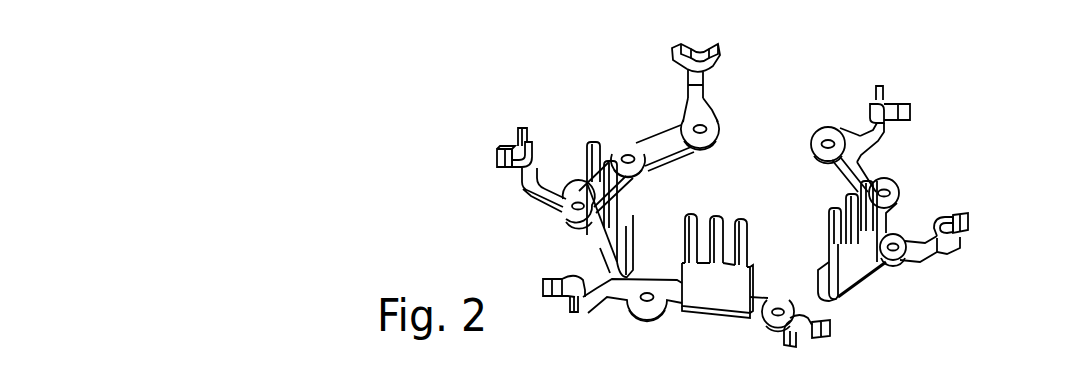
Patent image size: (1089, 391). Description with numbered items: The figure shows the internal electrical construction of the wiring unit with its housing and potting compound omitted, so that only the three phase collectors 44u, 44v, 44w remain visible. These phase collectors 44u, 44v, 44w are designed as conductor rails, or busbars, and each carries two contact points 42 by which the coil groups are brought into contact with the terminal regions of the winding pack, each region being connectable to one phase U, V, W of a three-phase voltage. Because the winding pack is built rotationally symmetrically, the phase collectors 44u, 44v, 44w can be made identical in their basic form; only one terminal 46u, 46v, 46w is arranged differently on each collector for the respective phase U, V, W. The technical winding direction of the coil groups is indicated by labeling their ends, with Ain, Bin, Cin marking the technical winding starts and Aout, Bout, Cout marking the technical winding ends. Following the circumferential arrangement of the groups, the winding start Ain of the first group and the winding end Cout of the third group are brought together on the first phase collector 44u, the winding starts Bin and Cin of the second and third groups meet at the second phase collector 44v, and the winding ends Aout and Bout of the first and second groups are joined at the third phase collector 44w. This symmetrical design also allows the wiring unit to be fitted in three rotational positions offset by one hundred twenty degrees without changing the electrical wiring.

The contact point 42 is at (523, 128).
The first phase collector 44u is at (662, 131).
The terminal 46u is at (620, 204).
The second phase collector 44v is at (850, 166).
The terminal 46v is at (830, 205).
The third phase collector 44w is at (770, 297).
The terminal 46w is at (725, 313).
The phase U is at (598, 232).
The phase V is at (853, 267).
The phase W is at (710, 296).
The technical winding start of group A Ain is at (712, 45).
The technical winding start of group B Bin is at (910, 112).
The technical winding start of group C Cin is at (966, 230).
The technical winding end of group A Aout is at (830, 332).
The technical winding end of group B Bout is at (575, 310).
The technical winding end of group C Cout is at (500, 157).